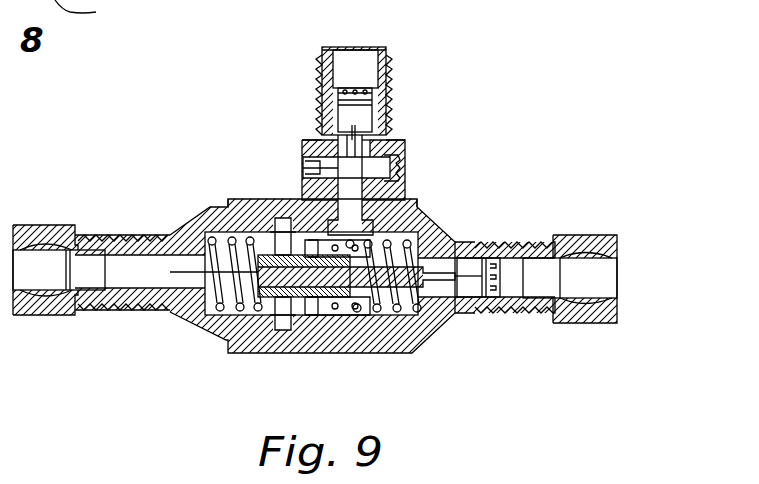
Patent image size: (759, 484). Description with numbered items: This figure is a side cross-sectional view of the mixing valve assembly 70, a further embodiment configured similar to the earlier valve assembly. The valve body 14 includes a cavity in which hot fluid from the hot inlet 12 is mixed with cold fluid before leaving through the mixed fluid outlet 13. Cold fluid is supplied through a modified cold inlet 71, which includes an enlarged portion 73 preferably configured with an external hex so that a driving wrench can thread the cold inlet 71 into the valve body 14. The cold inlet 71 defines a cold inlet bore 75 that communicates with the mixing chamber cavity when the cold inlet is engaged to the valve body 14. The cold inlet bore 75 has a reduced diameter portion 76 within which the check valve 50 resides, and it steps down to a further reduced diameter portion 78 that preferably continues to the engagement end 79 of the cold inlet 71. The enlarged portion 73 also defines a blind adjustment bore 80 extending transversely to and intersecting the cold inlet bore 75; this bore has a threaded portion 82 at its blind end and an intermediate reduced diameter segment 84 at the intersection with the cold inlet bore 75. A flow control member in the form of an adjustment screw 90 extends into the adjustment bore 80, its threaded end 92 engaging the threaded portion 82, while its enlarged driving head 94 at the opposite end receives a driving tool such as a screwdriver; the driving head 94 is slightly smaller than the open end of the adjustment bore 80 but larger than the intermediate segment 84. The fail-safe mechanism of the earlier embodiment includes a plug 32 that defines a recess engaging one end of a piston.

The hot inlet 12 is at (478, 240).
The mixed fluid outlet 13 is at (165, 236).
The valve body 14 is at (345, 357).
The plug 32 is at (440, 226).
The check valve 50 is at (487, 305).
The mixing valve assembly 70 is at (87, 11).
The cold inlet 71 is at (385, 62).
The enlarged portion 73 is at (410, 140).
The cold inlet bore 75 is at (358, 62).
The reduced diameter portion 76 is at (330, 138).
The further reduced diameter portion 78 is at (392, 122).
The engagement end 79 is at (308, 190).
The blind adjustment bore 80 is at (400, 185).
The threaded portion 82 is at (312, 142).
The intermediate reduced diameter segment 84 is at (388, 150).
The adjustment screw 90 is at (305, 162).
The threaded end 92 is at (303, 168).
The enlarged driving head 94 is at (404, 166).